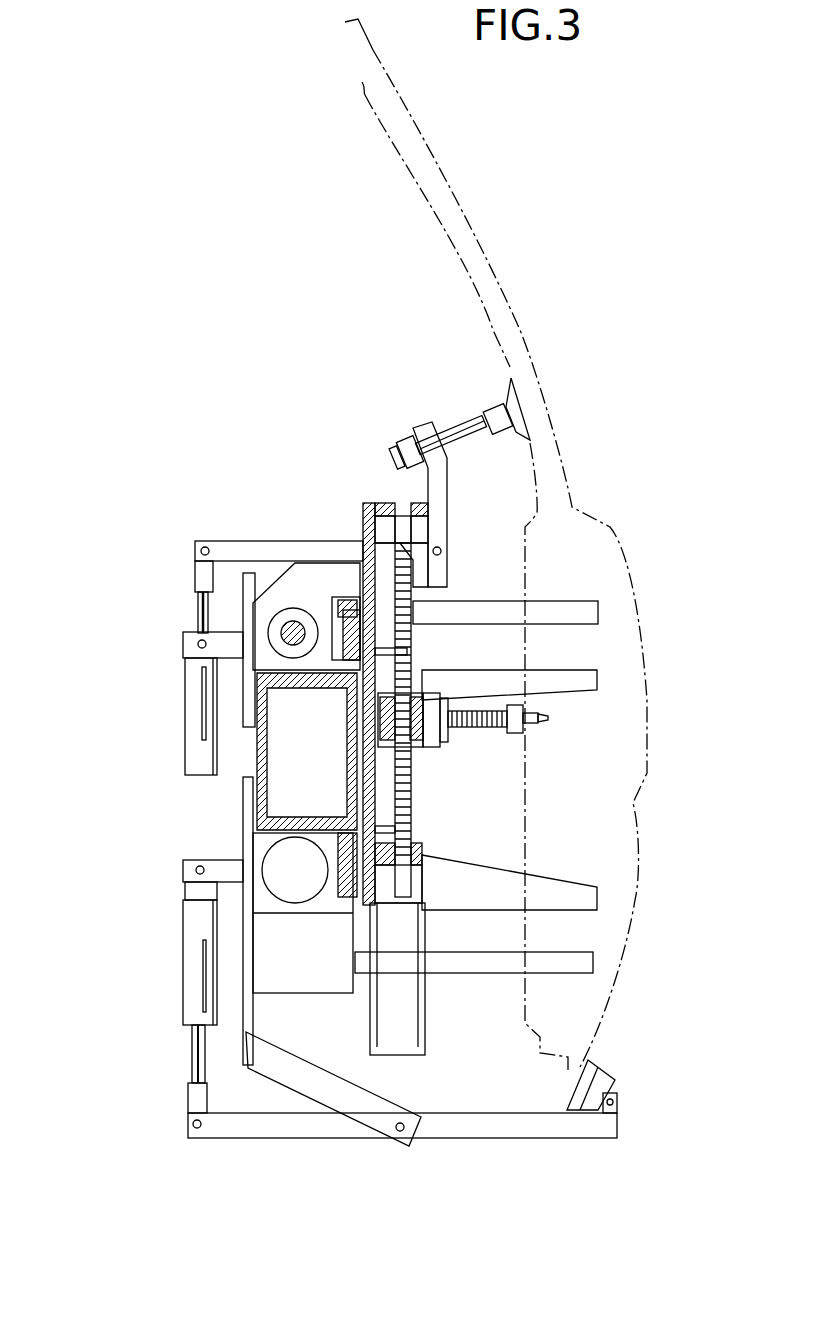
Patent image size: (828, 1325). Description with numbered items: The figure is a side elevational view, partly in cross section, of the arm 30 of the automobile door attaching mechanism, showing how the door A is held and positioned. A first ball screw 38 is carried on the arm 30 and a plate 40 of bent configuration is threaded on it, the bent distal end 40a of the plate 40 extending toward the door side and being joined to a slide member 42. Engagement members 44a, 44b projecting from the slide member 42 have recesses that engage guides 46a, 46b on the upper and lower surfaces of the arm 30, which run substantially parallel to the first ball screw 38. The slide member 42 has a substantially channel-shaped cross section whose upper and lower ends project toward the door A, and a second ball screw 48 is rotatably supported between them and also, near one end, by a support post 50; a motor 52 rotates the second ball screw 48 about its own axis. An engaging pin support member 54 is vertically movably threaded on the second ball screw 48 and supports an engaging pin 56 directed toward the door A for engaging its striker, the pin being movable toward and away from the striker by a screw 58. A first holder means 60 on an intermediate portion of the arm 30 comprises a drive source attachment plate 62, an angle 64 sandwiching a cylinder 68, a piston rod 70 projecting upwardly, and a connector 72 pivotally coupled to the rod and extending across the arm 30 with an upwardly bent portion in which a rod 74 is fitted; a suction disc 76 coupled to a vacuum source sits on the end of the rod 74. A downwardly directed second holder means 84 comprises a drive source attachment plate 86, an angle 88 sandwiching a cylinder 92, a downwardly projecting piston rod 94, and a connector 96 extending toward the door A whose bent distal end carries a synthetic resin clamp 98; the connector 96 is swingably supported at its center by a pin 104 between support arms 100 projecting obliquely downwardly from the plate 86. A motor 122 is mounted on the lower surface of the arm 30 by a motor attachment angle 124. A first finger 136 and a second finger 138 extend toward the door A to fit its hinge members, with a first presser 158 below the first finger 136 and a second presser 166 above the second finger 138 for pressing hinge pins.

The door A is at (540, 320).
The arm 30 is at (297, 680).
The first ball screw 38 is at (305, 645).
The plate 40 is at (300, 573).
The bent distal end 40a is at (342, 575).
The slide member 42 is at (375, 505).
The engagement member 44a is at (350, 625).
The engagement member 44b is at (345, 890).
The guide 46a is at (407, 652).
The guide 46b is at (380, 833).
The second ball screw 48 is at (411, 795).
The support post 50 is at (425, 845).
The motor 52 is at (400, 1033).
The engaging pin support member 54 is at (435, 748).
The engaging pin 56 is at (540, 728).
The screw 58 is at (502, 730).
The first holder means 60 is at (183, 521).
The drive source attachment plate 62 is at (248, 720).
The angle 64 is at (200, 645).
The cylinder 68 is at (200, 700).
The piston rod 70 is at (202, 612).
The connector 72 is at (258, 548).
The rod 74 is at (455, 430).
The suction disc 76 is at (497, 410).
The second holder means 84 is at (168, 1114).
The drive source attachment plate 86 is at (260, 796).
The angle 88 is at (223, 868).
The cylinder 92 is at (198, 957).
The piston rod 94 is at (200, 1068).
The connector 96 is at (450, 1140).
The clamp 98 is at (605, 1082).
The support arm 100 is at (310, 1075).
The pin 104 is at (400, 1122).
The motor 122 is at (300, 893).
The motor attachment angle 124 is at (260, 902).
The first finger 136 is at (495, 612).
The second finger 138 is at (498, 965).
The first presser 158 is at (543, 687).
The second presser 166 is at (540, 895).